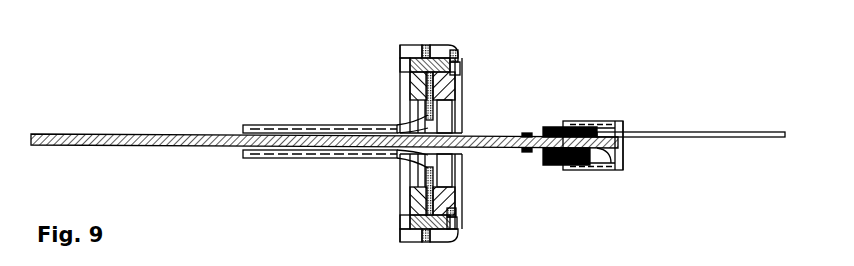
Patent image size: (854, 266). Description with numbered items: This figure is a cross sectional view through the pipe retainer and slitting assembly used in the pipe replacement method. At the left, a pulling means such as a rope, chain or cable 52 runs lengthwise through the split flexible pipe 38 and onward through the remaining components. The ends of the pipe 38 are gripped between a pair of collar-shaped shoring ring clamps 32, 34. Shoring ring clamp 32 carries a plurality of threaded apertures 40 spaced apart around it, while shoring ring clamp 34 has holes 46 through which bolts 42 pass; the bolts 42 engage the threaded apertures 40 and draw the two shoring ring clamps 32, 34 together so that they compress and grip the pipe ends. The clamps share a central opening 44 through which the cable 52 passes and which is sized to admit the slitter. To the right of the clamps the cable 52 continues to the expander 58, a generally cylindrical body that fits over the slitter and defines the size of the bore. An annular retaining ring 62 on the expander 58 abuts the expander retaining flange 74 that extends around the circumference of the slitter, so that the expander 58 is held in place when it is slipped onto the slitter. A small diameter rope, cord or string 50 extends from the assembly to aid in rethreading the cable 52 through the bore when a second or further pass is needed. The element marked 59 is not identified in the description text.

The shoring ring clamp 32 is at (408, 45).
The shoring ring clamp 34 is at (441, 46).
The split flexible pipe 38 is at (330, 125).
The threaded apertures 40 is at (402, 65).
The bolts 42 is at (453, 68).
The central opening 44 is at (447, 118).
The holes 46 is at (458, 60).
The rope, cord or string 50 is at (740, 140).
The cable 52 is at (157, 134).
The expander 58 is at (618, 121).
The insert 59 is at (612, 172).
The annular retaining ring 62 is at (572, 122).
The expander retaining flange 74 is at (600, 122).